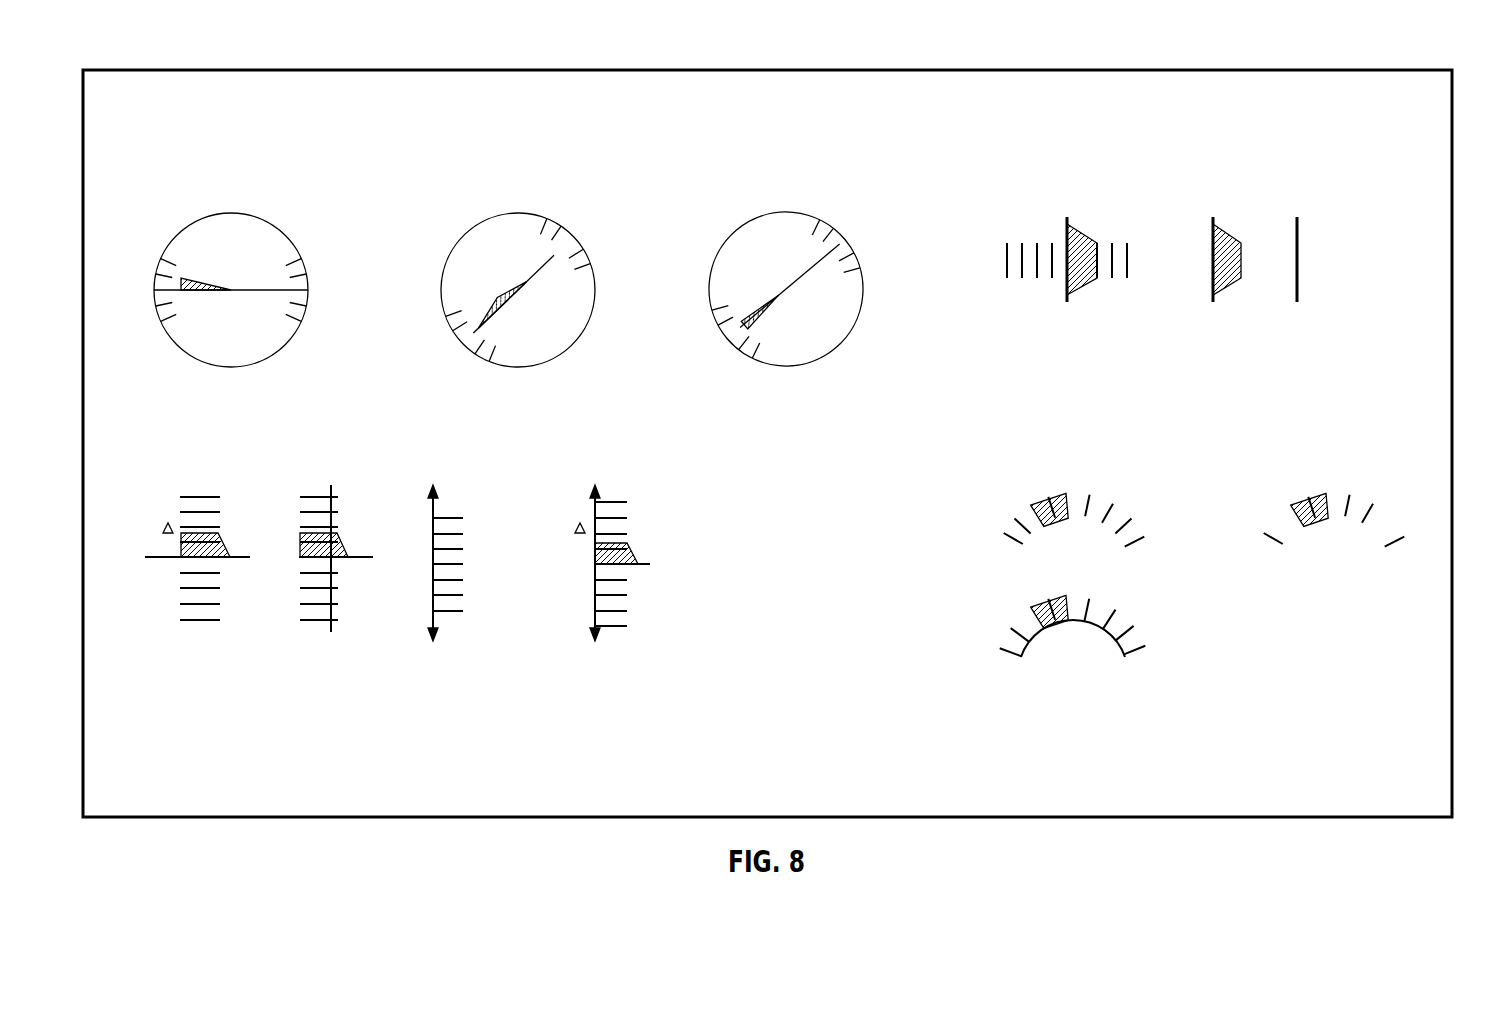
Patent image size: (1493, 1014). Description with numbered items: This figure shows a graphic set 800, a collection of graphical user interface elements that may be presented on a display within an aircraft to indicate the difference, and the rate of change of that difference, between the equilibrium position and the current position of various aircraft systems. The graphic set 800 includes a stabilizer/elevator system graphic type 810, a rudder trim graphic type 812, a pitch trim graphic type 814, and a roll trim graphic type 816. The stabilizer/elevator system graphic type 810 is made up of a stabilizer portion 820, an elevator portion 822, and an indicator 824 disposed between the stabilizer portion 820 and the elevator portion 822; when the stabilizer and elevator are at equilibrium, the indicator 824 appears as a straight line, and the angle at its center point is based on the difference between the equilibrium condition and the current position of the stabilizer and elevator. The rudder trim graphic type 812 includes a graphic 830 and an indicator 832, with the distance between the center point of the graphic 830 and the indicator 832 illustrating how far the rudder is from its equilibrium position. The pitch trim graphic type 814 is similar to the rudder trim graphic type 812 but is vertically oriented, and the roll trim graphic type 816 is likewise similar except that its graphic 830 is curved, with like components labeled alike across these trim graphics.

The flight control surface position display 800 is at (1236, 43).
The stabilizer/elevator position indicator 810 is at (297, 180).
The rudder trim indicator 812 is at (1295, 113).
The pitch trim indicator 814 is at (409, 696).
The roll trim indicator 816 is at (1021, 693).
The stabilizer scale 820 is at (160, 320).
The elevator scale 822 is at (302, 320).
The position pointer 824 is at (275, 285).
The trim scale 830 is at (1043, 222).
The trim position indicator 832 is at (1078, 232).